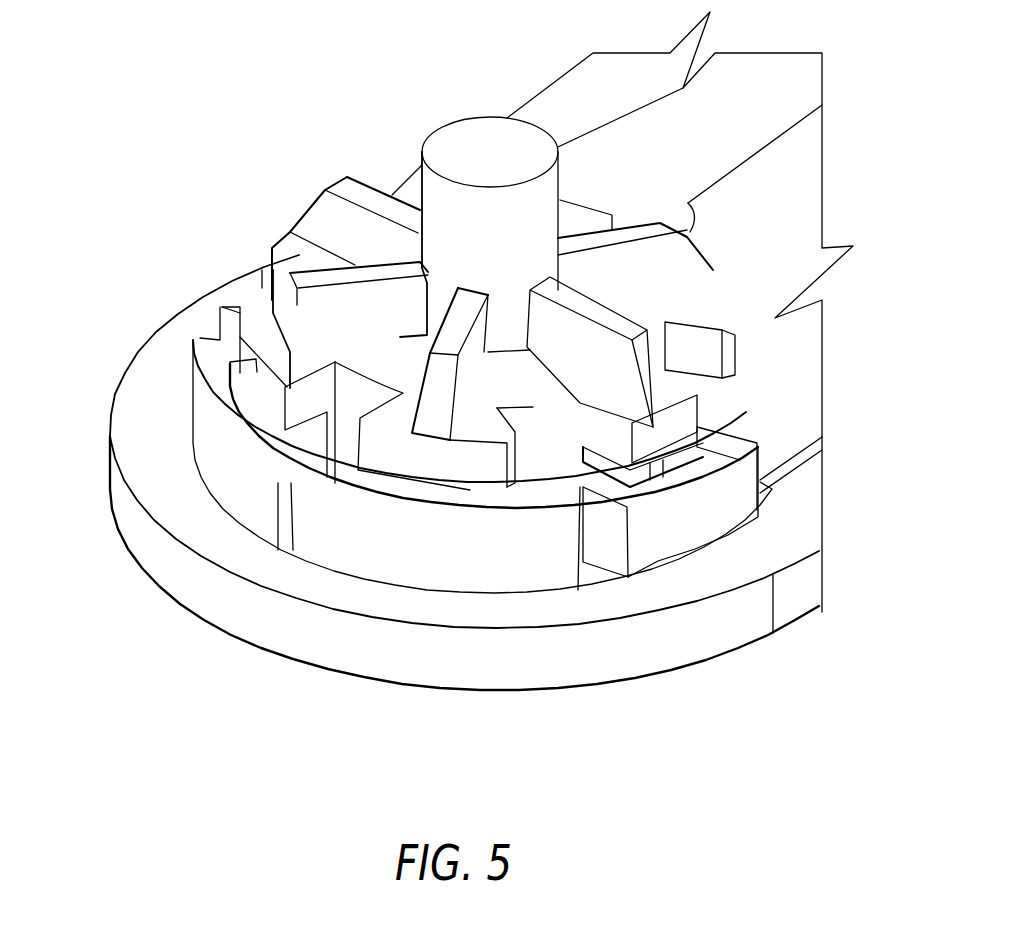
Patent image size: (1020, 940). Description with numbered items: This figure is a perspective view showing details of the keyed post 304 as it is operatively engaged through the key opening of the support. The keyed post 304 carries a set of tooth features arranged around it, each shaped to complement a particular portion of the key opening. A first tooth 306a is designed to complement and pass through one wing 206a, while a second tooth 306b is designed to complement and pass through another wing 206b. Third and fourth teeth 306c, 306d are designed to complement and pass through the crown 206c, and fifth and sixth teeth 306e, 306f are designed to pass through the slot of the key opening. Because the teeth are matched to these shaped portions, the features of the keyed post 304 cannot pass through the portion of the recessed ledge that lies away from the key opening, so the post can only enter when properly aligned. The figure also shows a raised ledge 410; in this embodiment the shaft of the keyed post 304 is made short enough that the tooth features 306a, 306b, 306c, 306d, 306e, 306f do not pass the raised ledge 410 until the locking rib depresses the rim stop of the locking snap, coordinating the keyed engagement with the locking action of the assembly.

The keyed post 304 is at (498, 98).
The first tooth 306a is at (673, 428).
The second tooth 306b is at (290, 240).
The third tooth 306c is at (440, 462).
The fourth tooth 306d is at (257, 373).
The fifth tooth 306e is at (583, 220).
The sixth tooth 306f is at (705, 312).
The wing 206a is at (693, 460).
The wing 206b is at (262, 290).
The crown 206c is at (313, 440).
The raised ledge 410 is at (543, 513).